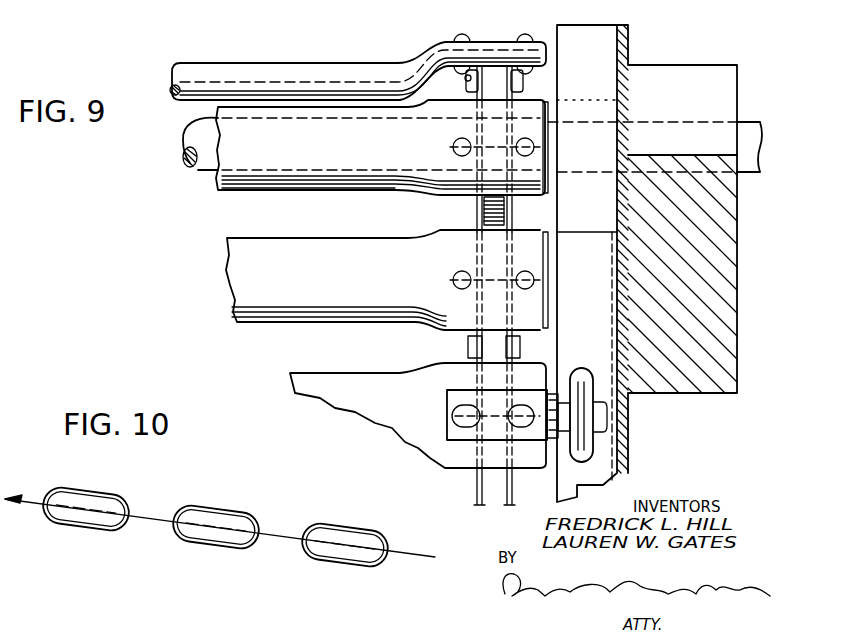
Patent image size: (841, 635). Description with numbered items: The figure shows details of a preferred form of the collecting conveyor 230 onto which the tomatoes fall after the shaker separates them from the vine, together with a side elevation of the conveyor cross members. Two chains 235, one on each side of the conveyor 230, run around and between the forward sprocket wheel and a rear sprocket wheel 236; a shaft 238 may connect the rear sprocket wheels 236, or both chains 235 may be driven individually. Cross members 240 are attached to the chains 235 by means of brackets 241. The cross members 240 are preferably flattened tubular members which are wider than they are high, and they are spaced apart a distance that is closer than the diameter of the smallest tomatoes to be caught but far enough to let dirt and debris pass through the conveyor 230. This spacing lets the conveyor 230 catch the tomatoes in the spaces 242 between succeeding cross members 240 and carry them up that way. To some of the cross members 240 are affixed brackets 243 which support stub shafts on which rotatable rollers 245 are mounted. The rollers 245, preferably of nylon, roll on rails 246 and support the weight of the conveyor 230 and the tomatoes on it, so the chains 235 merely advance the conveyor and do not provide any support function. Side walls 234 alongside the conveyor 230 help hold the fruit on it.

In FIG. 9, the conveyor 230 is at (275, 49).
In FIG. 10, the conveyor 230 is at (197, 492).
In FIG. 9, the side walls 234 is at (630, 50).
In FIG. 9, the chains 235 is at (466, 80).
In FIG. 9, the rear sprocket wheel 236 is at (478, 213).
In FIG. 9, the shaft 238 is at (182, 166).
In FIG. 9, the cross members 240 is at (238, 68).
In FIG. 10, the cross members 240 is at (80, 486).
In FIG. 9, the brackets 241 is at (497, 55).
In FIG. 9, the spaces 242 is at (358, 228).
In FIG. 10, the spaces 242 is at (158, 525).
In FIG. 9, the brackets 243 is at (452, 402).
In FIG. 9, the rollers 245 is at (584, 368).
In FIG. 9, the rails 246 is at (603, 218).